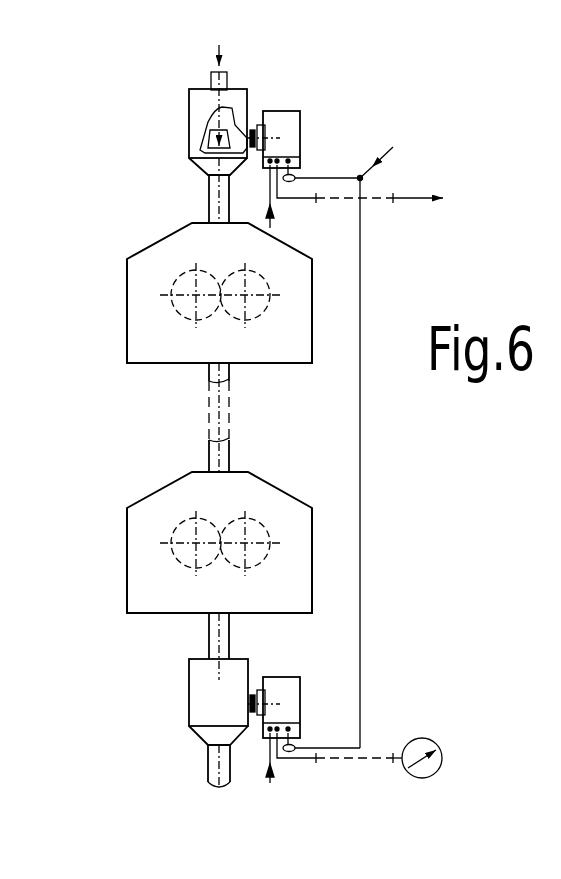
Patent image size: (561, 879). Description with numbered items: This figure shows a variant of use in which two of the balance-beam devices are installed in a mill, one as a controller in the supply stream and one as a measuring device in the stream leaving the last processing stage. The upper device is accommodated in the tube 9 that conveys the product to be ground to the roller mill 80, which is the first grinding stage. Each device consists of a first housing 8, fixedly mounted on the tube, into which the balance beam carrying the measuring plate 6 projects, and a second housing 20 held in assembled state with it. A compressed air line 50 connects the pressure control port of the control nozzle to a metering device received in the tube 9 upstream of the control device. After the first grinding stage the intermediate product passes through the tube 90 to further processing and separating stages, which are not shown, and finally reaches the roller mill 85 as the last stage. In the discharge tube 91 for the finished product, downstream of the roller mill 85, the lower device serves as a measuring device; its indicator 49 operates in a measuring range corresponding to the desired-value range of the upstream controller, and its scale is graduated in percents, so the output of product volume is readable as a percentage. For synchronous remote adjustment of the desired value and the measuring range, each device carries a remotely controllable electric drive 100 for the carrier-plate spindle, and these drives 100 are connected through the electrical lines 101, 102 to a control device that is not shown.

The tube 9 is at (208, 80).
The first housing 8 is at (188, 108).
The measuring plate 6 is at (246, 140).
The second housing 20 is at (306, 122).
The remotely controllable electric drive 100 is at (296, 175).
The electrical line 101 is at (385, 160).
The compressed air line 50 is at (410, 203).
The roller mill 80 is at (150, 247).
The tube 90 is at (207, 373).
The roller mill 85 is at (148, 496).
The discharge tube 91 is at (209, 636).
The electrical line 102 is at (363, 493).
The indicator 49 is at (436, 742).